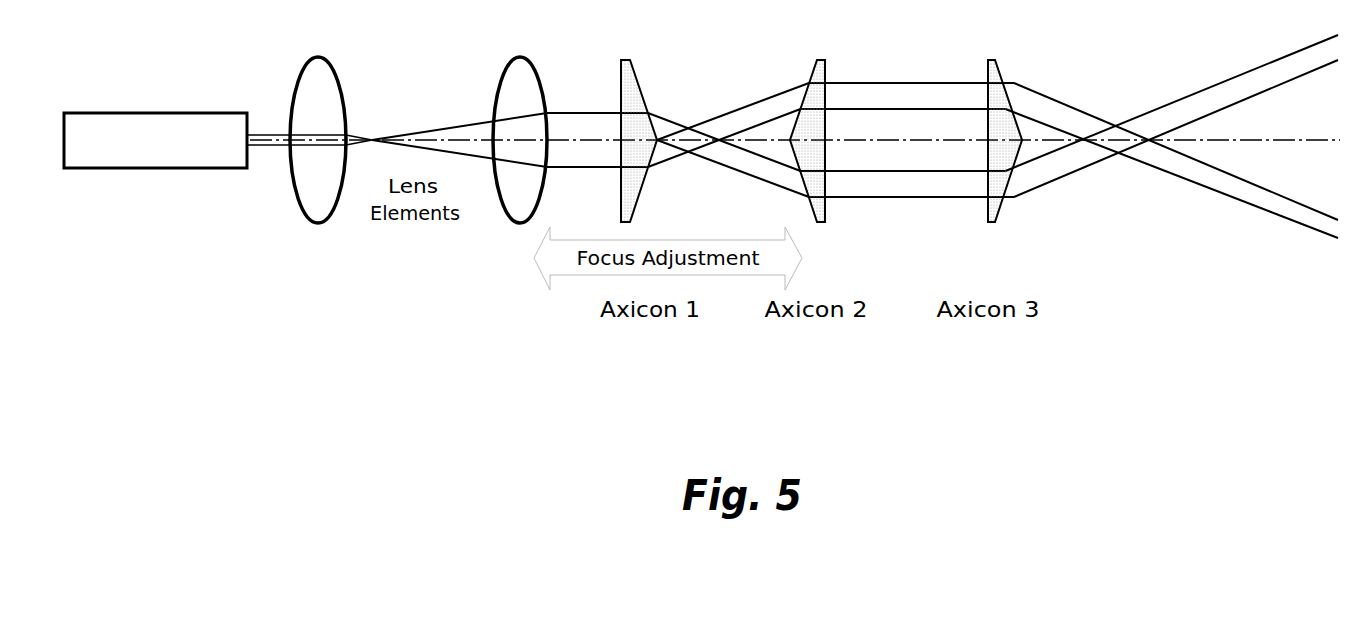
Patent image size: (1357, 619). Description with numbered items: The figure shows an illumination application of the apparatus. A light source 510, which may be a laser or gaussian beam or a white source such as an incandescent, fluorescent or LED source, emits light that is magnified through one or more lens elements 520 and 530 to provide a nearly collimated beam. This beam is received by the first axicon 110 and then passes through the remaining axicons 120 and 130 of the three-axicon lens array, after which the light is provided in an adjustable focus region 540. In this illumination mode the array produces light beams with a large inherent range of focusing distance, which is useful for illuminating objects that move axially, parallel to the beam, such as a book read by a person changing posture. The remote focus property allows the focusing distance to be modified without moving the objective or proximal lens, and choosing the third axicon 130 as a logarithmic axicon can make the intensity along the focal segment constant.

The light source 510 is at (157, 101).
The lens element 520 is at (302, 42).
The lens element 530 is at (489, 42).
The axicon 110 is at (609, 42).
The axicon 120 is at (789, 44).
The axicon 130 is at (969, 44).
The adjustable focus region 540 is at (1120, 112).